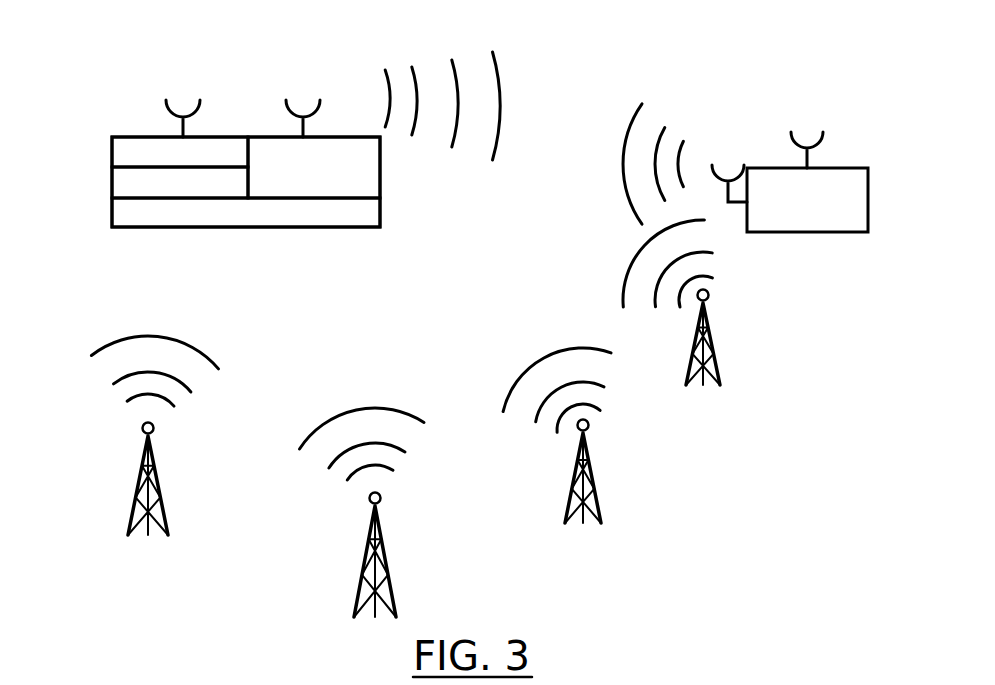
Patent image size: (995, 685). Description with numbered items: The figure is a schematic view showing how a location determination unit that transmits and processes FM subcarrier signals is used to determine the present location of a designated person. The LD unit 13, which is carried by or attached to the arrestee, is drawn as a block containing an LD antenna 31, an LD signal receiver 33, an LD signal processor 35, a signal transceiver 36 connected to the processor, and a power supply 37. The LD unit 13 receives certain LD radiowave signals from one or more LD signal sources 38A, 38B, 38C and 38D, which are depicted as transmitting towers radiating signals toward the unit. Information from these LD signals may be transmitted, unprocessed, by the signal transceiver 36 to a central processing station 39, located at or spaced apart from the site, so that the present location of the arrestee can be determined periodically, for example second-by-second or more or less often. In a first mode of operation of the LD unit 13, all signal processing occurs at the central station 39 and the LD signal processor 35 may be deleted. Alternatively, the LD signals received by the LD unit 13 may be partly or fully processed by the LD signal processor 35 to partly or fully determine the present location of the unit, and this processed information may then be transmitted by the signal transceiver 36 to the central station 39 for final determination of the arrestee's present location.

The LD unit 13 is at (118, 250).
The LD antenna 31 is at (182, 126).
The LD signal receiver 33 is at (113, 151).
The LD signal processor 35 is at (113, 179).
The signal transceiver 36 is at (325, 155).
The power supply 37 is at (113, 211).
The central processing station 39 is at (840, 150).
The LD signal source 38A is at (157, 487).
The LD signal source 38B is at (385, 552).
The LD signal source 38C is at (593, 477).
The LD signal source 38D is at (712, 347).